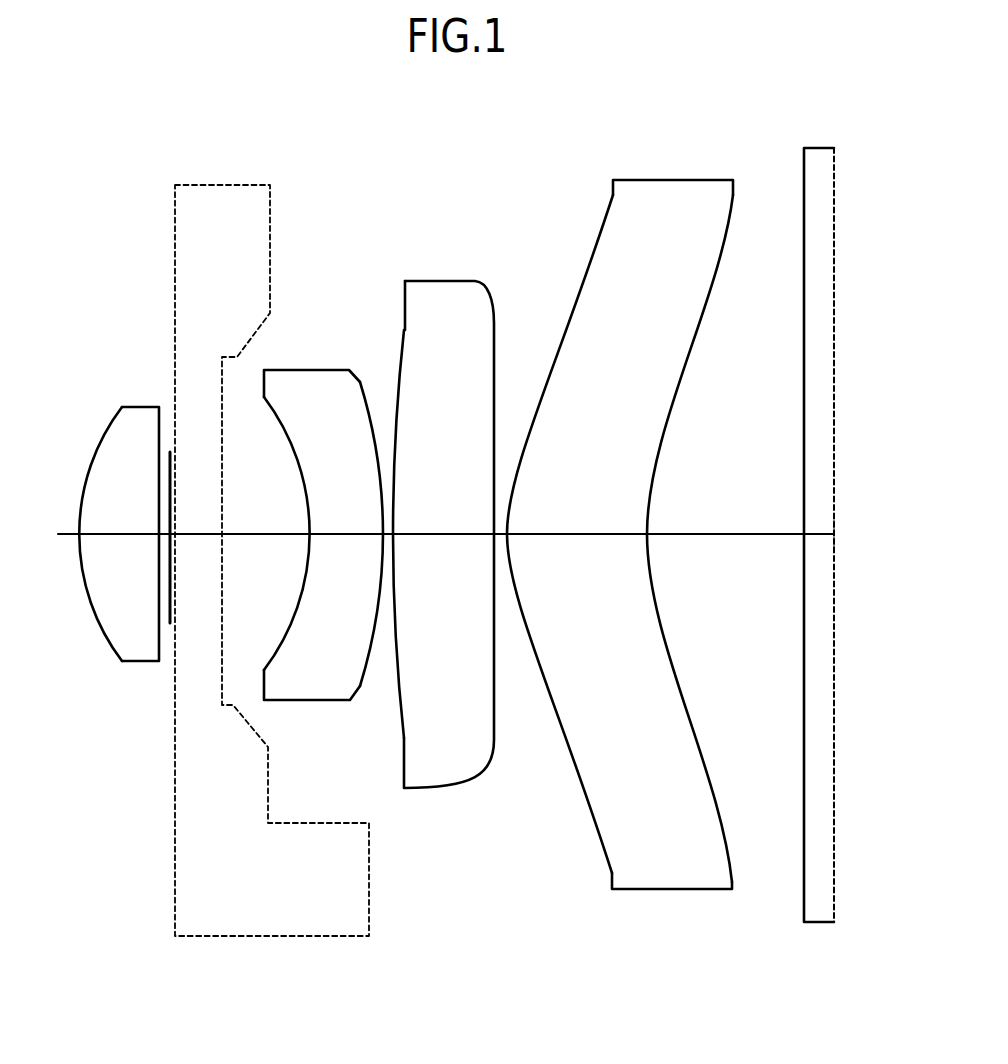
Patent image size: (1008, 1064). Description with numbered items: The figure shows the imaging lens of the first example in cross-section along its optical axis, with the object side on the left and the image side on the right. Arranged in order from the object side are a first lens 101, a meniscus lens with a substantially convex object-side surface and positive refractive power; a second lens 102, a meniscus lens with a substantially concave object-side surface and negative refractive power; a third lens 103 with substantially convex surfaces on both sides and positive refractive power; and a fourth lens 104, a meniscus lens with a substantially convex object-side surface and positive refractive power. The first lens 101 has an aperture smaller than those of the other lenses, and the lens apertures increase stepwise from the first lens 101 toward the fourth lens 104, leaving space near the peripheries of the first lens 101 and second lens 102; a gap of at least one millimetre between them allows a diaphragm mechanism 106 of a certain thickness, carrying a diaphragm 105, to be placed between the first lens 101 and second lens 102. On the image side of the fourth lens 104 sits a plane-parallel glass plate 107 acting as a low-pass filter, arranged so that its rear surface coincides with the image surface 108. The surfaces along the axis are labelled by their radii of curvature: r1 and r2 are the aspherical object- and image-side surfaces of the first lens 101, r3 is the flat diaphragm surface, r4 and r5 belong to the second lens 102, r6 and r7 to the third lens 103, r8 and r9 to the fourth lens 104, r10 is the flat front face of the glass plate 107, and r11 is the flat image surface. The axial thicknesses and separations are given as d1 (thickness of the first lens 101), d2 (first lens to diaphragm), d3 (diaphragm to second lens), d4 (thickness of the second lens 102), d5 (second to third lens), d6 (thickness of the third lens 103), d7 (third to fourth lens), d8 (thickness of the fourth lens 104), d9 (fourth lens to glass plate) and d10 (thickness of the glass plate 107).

The first lens 101 is at (110, 688).
The second lens 102 is at (323, 615).
The third lens 103 is at (440, 620).
The fourth lens 104 is at (632, 562).
The diaphragm 105 is at (171, 492).
The diaphragm mechanism 106 is at (238, 185).
The plane-parallel glass plate 107 is at (828, 505).
The image surface 108 is at (834, 560).
The radius of curvature of object-side surface of first lens r1 is at (99, 449).
The radius of curvature of image-side surface of first lens r2 is at (140, 505).
The radius of curvature of diaphragm surface r3 is at (170, 453).
The radius of curvature of object-side surface of second lens r4 is at (297, 442).
The radius of curvature of image-side surface of second lens r5 is at (357, 474).
The radius of curvature of object-side surface of third lens r6 is at (405, 312).
The radius of curvature of image-side surface of third lens r7 is at (502, 478).
The radius of curvature of object-side surface of fourth lens r8 is at (596, 230).
The radius of curvature of image-side surface of fourth lens r9 is at (736, 196).
The radius of curvature of object-side surface of glass plate r10 is at (805, 160).
The radius of curvature of image surface r11 is at (835, 507).
The wall thickness of first lens d1 is at (117, 535).
The surface separation between first lens and diaphragm d2 is at (158, 536).
The surface separation between diaphragm and second lens d3 is at (233, 536).
The wall thickness of second lens d4 is at (348, 536).
The surface separation between second lens and third lens d5 is at (388, 536).
The wall thickness of third lens d6 is at (442, 536).
The surface separation between third lens and fourth lens d7 is at (500, 536).
The wall thickness of fourth lens d8 is at (585, 536).
The surface separation between fourth lens and glass plate d9 is at (720, 536).
The wall thickness of glass plate d10 is at (822, 536).